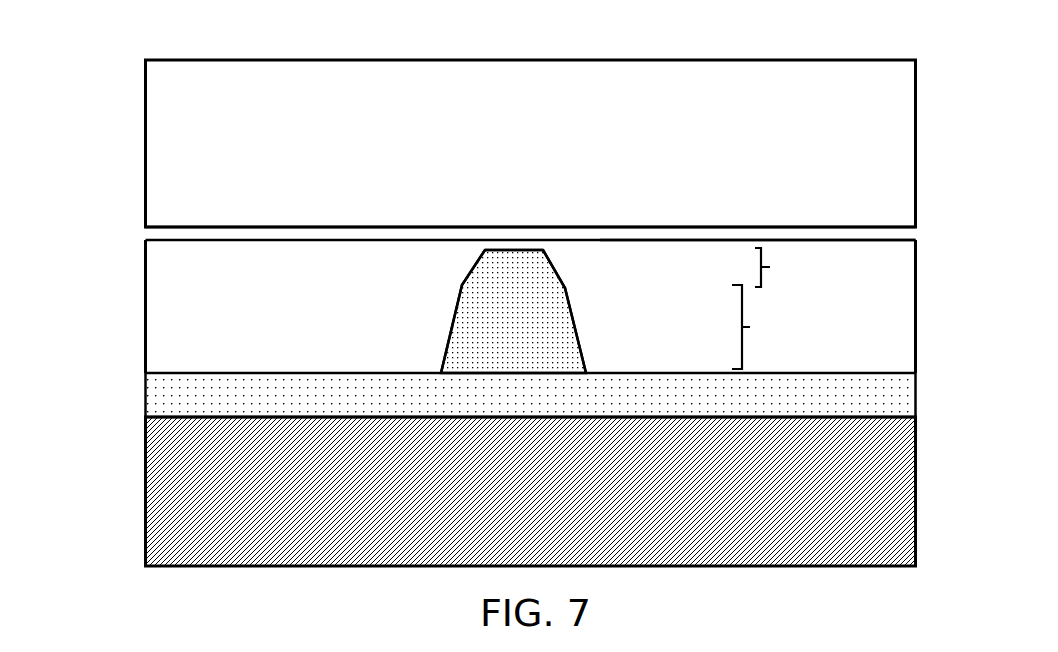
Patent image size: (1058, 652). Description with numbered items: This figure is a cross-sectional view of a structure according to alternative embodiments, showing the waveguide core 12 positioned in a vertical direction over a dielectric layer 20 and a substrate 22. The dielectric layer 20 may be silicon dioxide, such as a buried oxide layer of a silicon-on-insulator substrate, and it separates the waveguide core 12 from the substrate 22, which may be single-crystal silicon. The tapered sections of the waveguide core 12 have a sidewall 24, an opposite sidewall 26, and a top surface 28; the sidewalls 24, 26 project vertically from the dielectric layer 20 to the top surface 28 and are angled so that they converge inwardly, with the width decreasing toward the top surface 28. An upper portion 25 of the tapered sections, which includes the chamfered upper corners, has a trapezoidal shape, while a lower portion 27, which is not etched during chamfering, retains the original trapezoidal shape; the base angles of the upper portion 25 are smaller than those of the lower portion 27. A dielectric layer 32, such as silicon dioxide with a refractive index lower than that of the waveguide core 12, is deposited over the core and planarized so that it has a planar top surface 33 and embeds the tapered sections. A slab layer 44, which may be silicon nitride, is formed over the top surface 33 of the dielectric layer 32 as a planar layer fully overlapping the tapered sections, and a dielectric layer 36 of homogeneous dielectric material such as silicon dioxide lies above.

The waveguide core 12 is at (533, 313).
The dielectric layer 20 is at (205, 397).
The substrate 22 is at (205, 495).
The sidewall 24 is at (447, 337).
The upper portion 25 is at (780, 267).
The sidewall 26 is at (584, 347).
The lower portion 27 is at (760, 327).
The top surface 28 is at (517, 250).
The dielectric layer 32 is at (207, 298).
The top surface 33 is at (702, 240).
The dielectric layer 36 is at (210, 127).
The slab layer 44 is at (207, 235).